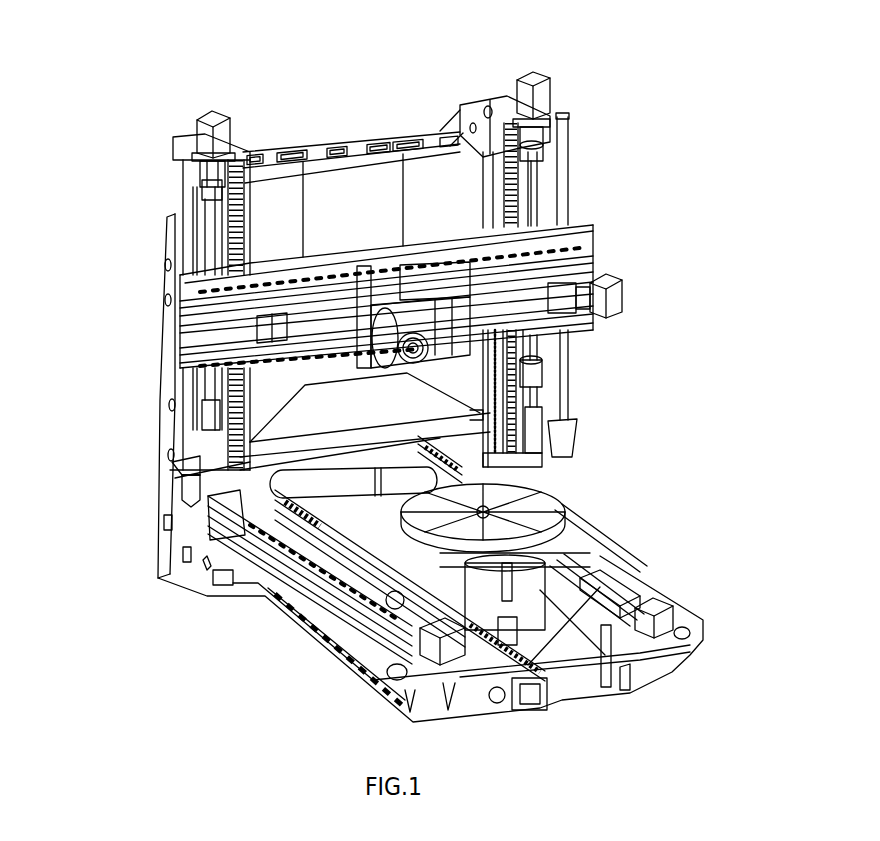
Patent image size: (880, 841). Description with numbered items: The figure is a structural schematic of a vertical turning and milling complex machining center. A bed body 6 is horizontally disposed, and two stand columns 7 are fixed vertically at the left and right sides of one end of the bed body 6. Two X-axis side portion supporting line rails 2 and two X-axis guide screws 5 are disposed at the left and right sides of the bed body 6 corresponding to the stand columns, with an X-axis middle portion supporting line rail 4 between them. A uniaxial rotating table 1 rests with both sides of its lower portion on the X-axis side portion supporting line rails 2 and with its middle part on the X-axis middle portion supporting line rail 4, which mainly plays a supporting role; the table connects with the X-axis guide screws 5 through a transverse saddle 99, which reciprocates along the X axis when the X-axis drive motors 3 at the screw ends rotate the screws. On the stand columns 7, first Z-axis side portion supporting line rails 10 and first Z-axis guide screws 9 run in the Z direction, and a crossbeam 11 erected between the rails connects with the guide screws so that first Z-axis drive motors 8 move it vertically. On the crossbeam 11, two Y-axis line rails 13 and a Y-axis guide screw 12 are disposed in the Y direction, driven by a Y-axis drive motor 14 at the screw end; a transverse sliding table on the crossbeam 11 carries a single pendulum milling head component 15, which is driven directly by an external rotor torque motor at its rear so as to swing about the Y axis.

The uniaxial rotating table 1 is at (557, 500).
The X-axis side portion supporting line rails 2 is at (190, 470).
The X-axis drive motors 3 is at (633, 613).
The X-axis middle portion supporting line rail 4 is at (657, 610).
The X-axis guide screws 5 is at (215, 590).
The bed body 6 is at (240, 545).
The stand columns 7 is at (190, 177).
The first Z-axis drive motors 8 is at (537, 95).
The first Z-axis guide screws 9 is at (213, 237).
The first Z-axis side portion supporting line rails 10 is at (520, 183).
The crossbeam 11 is at (200, 320).
The Y-axis guide screw 12 is at (597, 242).
The Y-axis line rails 13 is at (187, 345).
The Y-axis drive motor 14 is at (610, 293).
The single pendulum milling head component 15 is at (455, 330).
The transverse saddle 99 is at (590, 573).